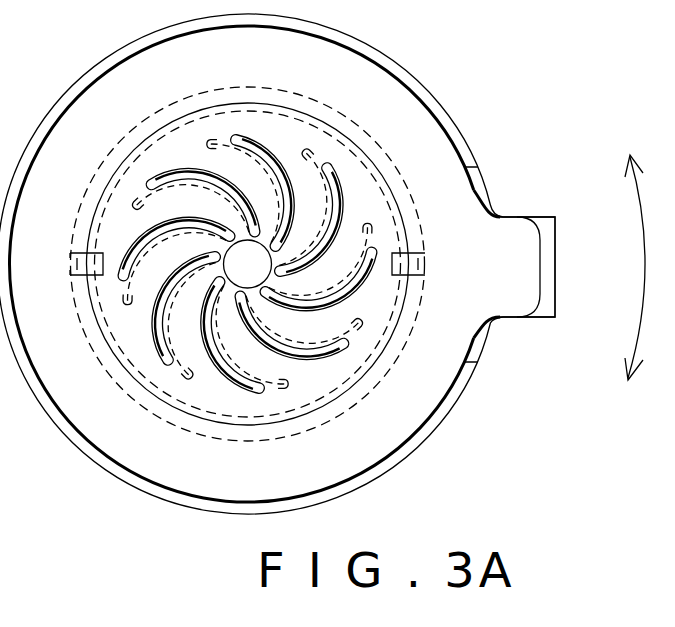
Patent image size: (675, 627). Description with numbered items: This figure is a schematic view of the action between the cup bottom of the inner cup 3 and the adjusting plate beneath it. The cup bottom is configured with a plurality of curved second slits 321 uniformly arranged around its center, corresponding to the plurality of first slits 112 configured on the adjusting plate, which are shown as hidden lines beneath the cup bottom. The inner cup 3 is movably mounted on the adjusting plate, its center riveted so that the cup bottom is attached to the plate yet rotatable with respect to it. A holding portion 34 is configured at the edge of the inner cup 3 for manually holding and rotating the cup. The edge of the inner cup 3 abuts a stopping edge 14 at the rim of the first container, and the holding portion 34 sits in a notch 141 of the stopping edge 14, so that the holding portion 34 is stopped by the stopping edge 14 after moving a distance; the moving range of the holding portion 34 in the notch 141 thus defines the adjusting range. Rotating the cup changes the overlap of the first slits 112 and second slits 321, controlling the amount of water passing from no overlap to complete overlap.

The inner cup 3 is at (455, 192).
The stopping edge 14 is at (461, 147).
The notch 141 is at (483, 201).
The holding portion 34 is at (523, 252).
The first slits 112 is at (352, 138).
The second slits 321 is at (273, 150).